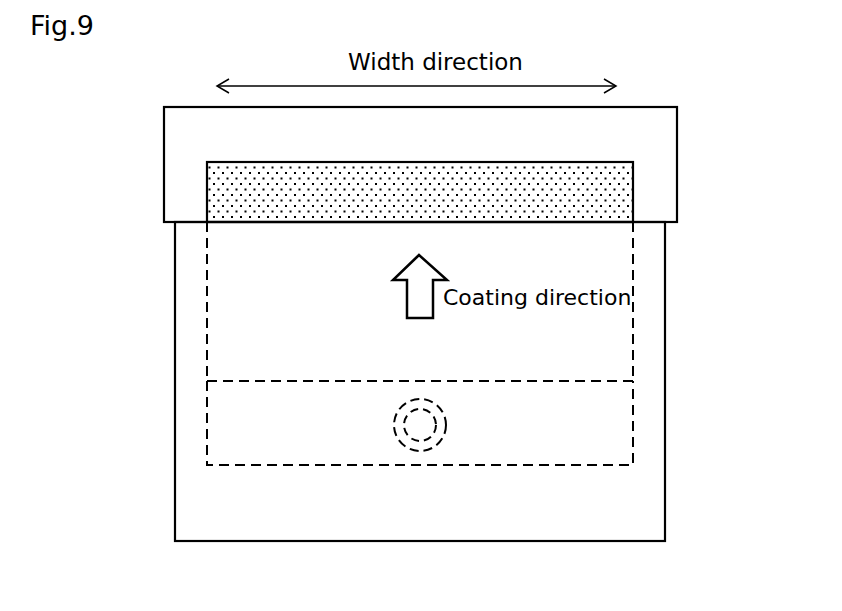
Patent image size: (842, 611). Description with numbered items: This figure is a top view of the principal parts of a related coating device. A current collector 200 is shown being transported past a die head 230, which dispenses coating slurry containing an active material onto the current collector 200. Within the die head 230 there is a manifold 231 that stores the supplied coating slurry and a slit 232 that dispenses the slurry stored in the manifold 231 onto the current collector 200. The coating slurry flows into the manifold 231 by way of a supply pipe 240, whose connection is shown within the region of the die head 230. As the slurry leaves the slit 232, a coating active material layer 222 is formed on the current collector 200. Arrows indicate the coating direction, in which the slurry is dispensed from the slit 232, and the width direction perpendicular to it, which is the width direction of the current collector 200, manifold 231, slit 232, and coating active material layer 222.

The current collector 200 is at (677, 143).
The coating active material layer 222 is at (633, 189).
The die head 230 is at (665, 487).
The manifold 231 is at (633, 408).
The slit 232 is at (633, 272).
The supply pipe 240 is at (441, 442).